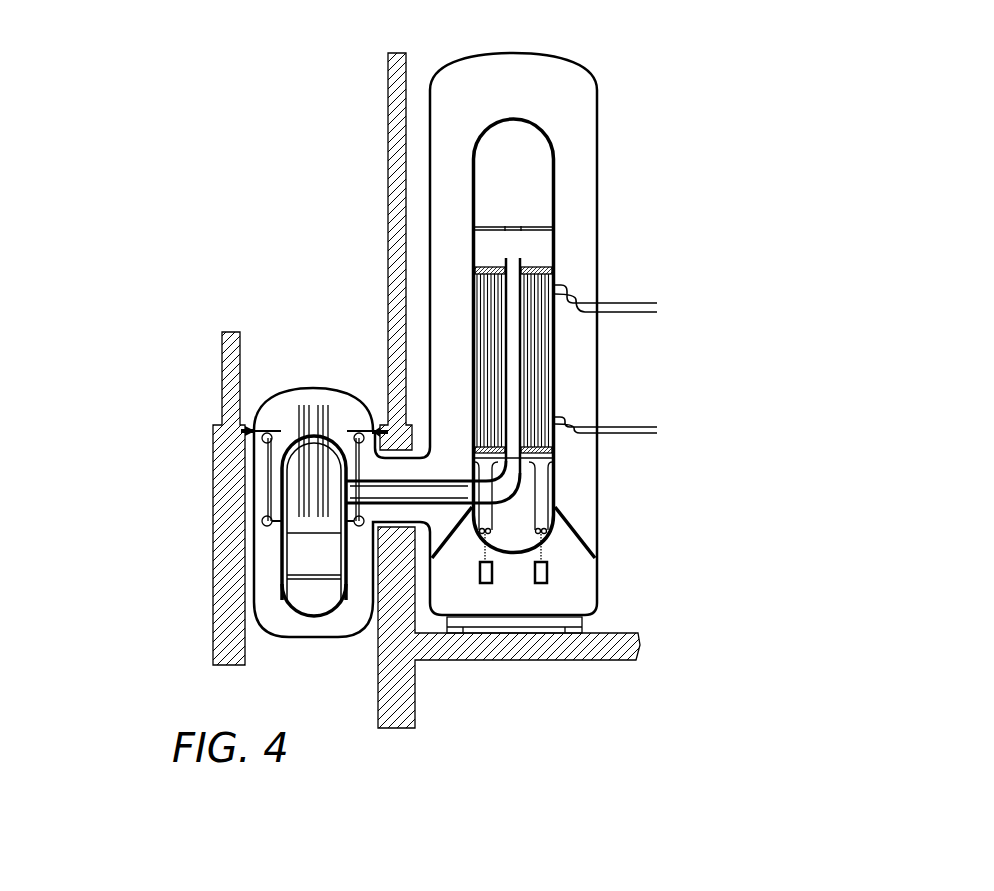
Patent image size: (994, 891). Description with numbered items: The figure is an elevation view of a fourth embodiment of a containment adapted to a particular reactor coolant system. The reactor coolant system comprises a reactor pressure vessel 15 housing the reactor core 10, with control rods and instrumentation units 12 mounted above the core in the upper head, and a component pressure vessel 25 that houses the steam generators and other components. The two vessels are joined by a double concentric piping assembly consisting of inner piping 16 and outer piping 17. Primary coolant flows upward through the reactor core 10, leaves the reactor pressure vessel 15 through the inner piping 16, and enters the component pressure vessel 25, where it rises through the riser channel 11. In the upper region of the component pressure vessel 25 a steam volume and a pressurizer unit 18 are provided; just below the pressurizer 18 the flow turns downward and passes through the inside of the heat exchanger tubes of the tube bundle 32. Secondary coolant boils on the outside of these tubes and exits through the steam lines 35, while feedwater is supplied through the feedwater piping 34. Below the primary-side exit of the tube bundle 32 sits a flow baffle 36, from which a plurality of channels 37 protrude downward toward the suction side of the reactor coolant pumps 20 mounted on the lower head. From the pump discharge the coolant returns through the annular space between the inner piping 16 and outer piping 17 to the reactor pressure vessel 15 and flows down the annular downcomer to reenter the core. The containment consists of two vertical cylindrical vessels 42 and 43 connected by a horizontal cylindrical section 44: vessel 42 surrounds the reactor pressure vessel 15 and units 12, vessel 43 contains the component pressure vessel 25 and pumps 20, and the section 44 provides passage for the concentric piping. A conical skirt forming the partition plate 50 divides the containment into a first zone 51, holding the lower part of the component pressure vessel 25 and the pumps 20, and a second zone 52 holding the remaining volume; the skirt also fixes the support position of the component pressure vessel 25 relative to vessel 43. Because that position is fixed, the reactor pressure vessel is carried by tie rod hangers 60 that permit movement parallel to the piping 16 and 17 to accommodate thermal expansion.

The reactor core 10 is at (247, 602).
The riser channel 11 is at (522, 313).
The control rods and instrumentation units 12 is at (310, 417).
The reactor pressure vessel 15 is at (312, 557).
The inner piping 16 is at (475, 483).
The outer piping 17 is at (437, 503).
The pressurizer unit 18 is at (530, 178).
The reactor coolant pumps 20 is at (548, 568).
The component pressure vessel 25 is at (470, 250).
The tube bundle 32 is at (543, 368).
The feedwater piping 34 is at (623, 428).
The steam lines 35 is at (615, 308).
The flow baffle 36 is at (527, 460).
The channels 37 is at (547, 500).
The vertical cylindrical vessel 42 is at (280, 548).
The vertical cylindrical vessel 43 is at (597, 197).
The horizontal cylindrical section 44 is at (388, 350).
The partition plate 50 is at (583, 540).
The first zone 51 is at (523, 600).
The second zone 52 is at (452, 150).
The tie rod hangers 60 is at (270, 456).